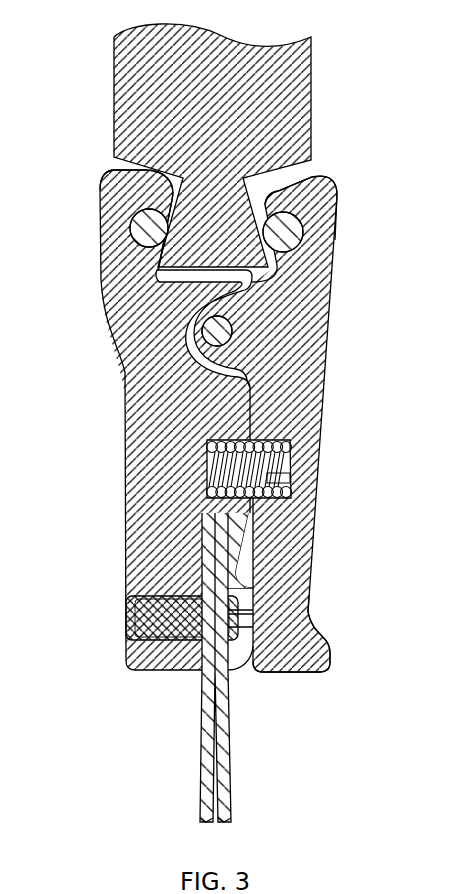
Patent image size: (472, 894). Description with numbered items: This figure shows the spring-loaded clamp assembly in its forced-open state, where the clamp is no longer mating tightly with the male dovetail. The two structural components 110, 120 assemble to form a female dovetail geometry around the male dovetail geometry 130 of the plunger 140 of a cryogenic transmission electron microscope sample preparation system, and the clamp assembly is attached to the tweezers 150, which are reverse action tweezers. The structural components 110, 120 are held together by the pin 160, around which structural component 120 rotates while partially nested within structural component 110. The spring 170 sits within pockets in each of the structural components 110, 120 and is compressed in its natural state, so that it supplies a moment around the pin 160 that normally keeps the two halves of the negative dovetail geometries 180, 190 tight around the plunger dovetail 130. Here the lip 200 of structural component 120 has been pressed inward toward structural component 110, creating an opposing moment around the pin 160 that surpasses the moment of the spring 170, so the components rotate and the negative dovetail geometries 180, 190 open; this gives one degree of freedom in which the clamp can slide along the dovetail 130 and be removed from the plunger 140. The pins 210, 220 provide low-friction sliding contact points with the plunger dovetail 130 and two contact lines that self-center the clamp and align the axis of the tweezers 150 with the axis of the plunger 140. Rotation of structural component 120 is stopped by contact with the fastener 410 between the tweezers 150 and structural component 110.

The structural component 110 is at (150, 436).
The structural component 120 is at (290, 414).
The male dovetail geometry 130 is at (217, 266).
The plunger 140 is at (301, 62).
The tweezers 150 is at (250, 790).
The pin 160 is at (233, 330).
The spring 170 is at (297, 478).
The negative dovetail geometry 180 is at (138, 194).
The negative dovetail geometry 190 is at (300, 190).
The lip 200 is at (327, 660).
The pin 210 is at (132, 232).
The pin 220 is at (306, 236).
The fastener 410 is at (242, 590).